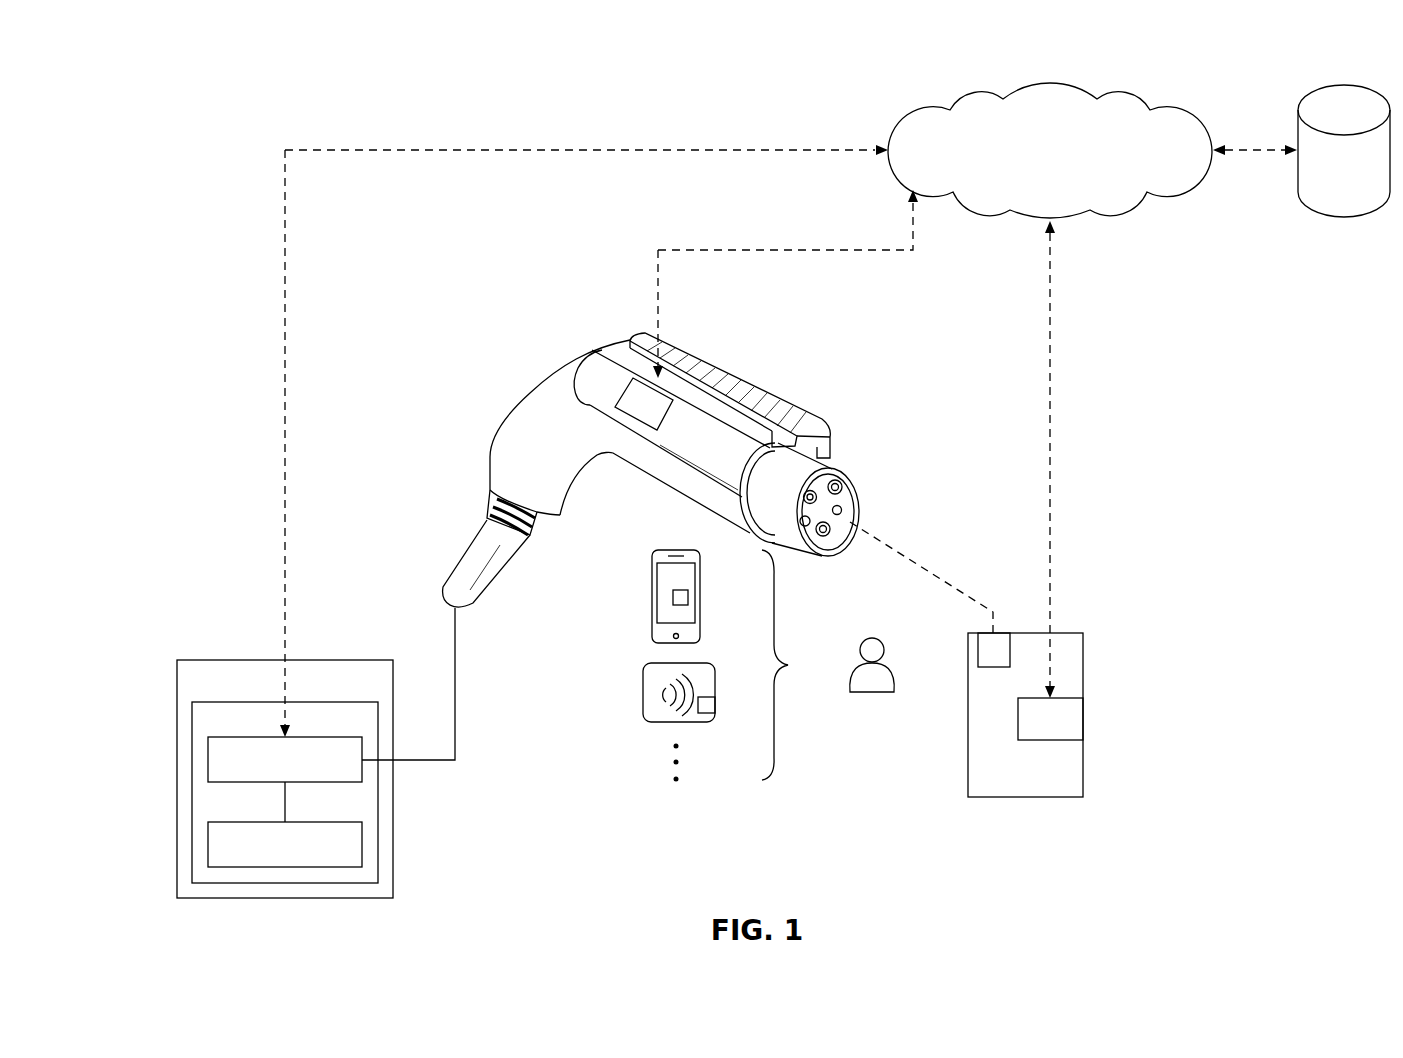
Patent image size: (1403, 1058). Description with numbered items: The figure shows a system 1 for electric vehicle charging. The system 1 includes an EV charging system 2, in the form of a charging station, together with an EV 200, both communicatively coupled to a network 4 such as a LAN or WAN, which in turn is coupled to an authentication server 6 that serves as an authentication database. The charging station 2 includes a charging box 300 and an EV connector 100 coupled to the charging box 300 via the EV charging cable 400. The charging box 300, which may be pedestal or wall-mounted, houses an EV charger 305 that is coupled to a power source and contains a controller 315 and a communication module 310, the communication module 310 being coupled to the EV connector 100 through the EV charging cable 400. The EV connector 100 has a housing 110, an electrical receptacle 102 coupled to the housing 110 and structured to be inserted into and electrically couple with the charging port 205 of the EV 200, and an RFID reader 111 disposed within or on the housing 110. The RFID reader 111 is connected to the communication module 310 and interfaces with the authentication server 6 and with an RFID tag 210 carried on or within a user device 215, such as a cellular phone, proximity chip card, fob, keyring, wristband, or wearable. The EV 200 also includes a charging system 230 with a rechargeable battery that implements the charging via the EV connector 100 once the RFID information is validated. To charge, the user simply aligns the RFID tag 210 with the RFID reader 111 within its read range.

The system 1 is at (291, 90).
The EV charging system 2 is at (686, 469).
The network 4 is at (1052, 84).
The authentication server 6 is at (1347, 82).
The EV connector 100 is at (790, 400).
The electrical receptacle 102 is at (845, 510).
The housing 110 is at (722, 453).
The RFID reader 111 is at (637, 393).
The EV 200 is at (1015, 797).
The charging port 205 is at (978, 648).
The RFID tag 210 is at (688, 590).
The user device 215 is at (739, 666).
The charging system 230 is at (1018, 718).
The charging box 300 is at (242, 660).
The EV charger 305 is at (253, 702).
The communication module 310 is at (273, 737).
The controller 315 is at (273, 822).
The EV charging cable 400 is at (455, 702).